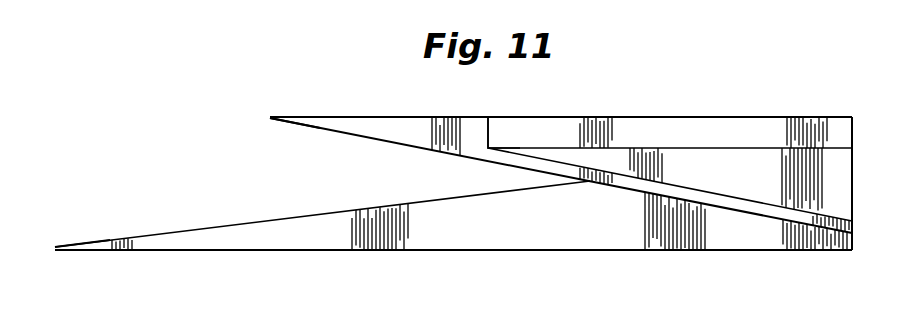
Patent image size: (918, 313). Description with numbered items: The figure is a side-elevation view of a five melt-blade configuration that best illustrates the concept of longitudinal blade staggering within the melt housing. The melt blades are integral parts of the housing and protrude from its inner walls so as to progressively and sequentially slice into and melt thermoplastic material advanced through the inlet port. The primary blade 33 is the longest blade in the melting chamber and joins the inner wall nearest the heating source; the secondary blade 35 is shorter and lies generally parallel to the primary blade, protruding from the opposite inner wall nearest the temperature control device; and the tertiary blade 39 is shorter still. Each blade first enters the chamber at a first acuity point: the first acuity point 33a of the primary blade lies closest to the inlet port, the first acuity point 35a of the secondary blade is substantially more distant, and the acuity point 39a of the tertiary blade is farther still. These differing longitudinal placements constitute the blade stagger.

The primary blade 33 is at (172, 232).
The first acuity point of primary blade 33a is at (55, 249).
The secondary blade 35 is at (378, 116).
The first acuity point of secondary blade 35a is at (270, 116).
The tertiary blade 39 is at (653, 147).
The acuity point of tertiary blade 39a is at (488, 146).